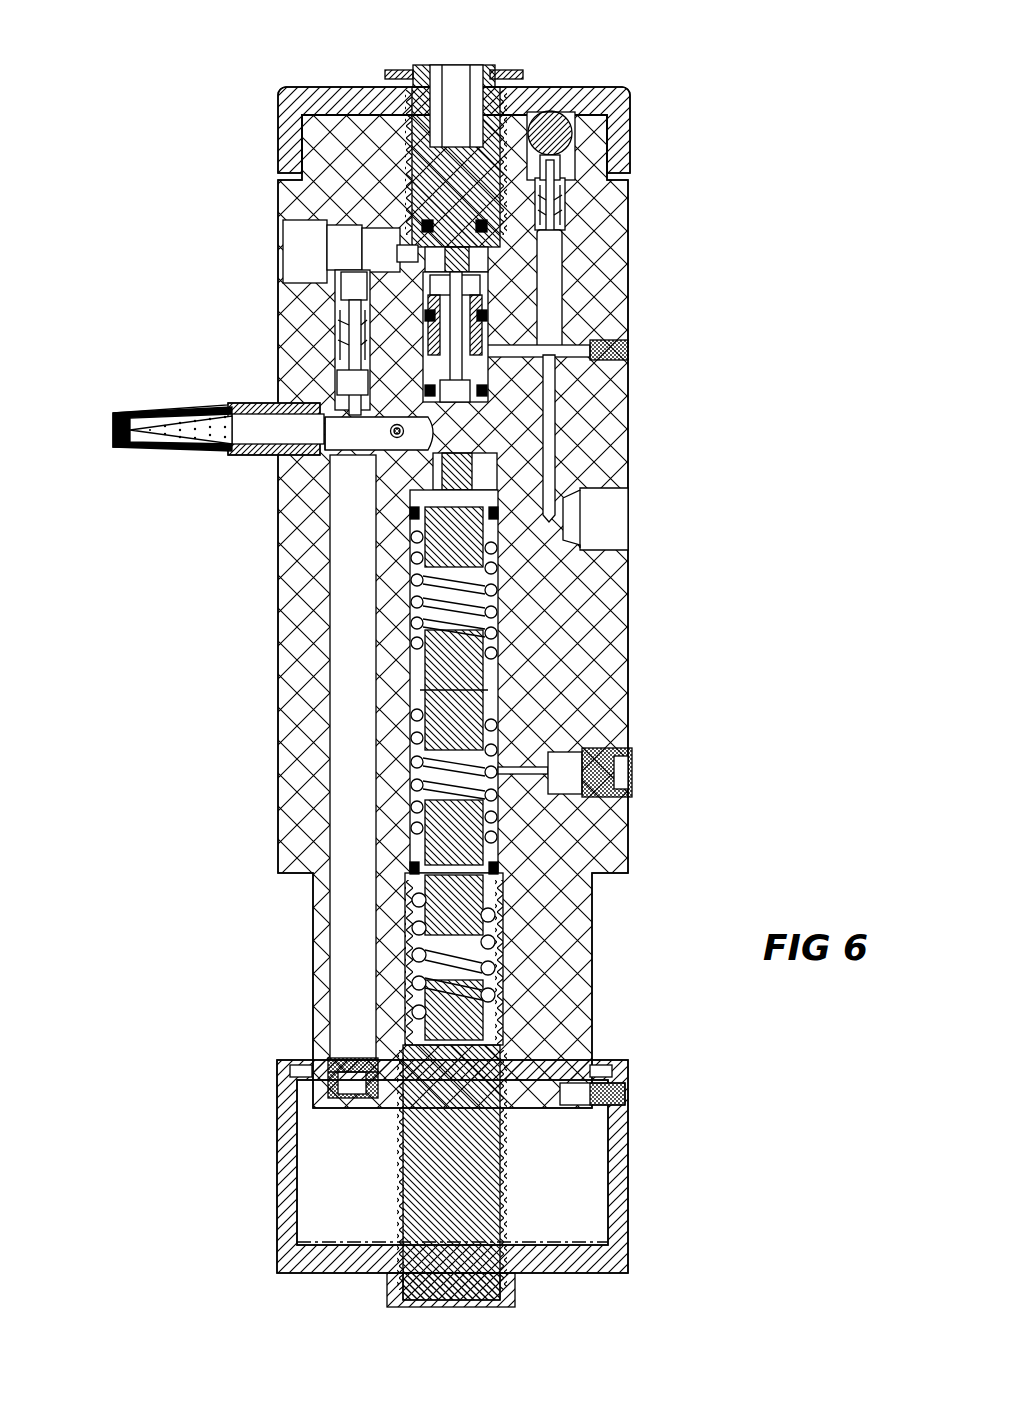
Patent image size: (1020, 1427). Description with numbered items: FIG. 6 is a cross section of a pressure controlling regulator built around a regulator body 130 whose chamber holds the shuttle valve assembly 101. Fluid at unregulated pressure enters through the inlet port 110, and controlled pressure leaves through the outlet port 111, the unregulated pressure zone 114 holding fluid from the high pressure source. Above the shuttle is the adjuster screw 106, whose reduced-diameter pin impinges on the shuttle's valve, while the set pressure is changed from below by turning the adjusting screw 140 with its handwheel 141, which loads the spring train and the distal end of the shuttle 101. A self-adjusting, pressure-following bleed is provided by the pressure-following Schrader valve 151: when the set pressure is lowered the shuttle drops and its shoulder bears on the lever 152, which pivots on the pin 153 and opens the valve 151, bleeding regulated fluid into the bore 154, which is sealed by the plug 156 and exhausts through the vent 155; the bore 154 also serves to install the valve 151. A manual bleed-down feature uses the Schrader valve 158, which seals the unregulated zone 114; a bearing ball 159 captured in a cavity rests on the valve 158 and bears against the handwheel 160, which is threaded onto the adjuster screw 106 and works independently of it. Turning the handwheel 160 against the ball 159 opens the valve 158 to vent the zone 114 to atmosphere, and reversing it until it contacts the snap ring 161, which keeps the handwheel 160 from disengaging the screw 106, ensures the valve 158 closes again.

The shuttle valve assembly 101 is at (490, 355).
The adjuster screw 106 is at (491, 58).
The inlet port 110 is at (610, 520).
The outlet port 111 is at (300, 245).
The unregulated pressure zone 114 is at (552, 330).
The regulator body 130 is at (632, 636).
The adjusting screw 140 is at (505, 1170).
The handwheel 141 is at (635, 1258).
The pressure-following Schrader valve 151 is at (333, 407).
The lever 152 is at (343, 450).
The pin 153 is at (377, 444).
The bore 154 is at (352, 536).
The vent 155 is at (112, 410).
The plug 156 is at (332, 1063).
The Schrader valve 158 is at (563, 160).
The bearing ball 159 is at (575, 128).
The handwheel 160 is at (617, 84).
The snap ring 161 is at (380, 70).